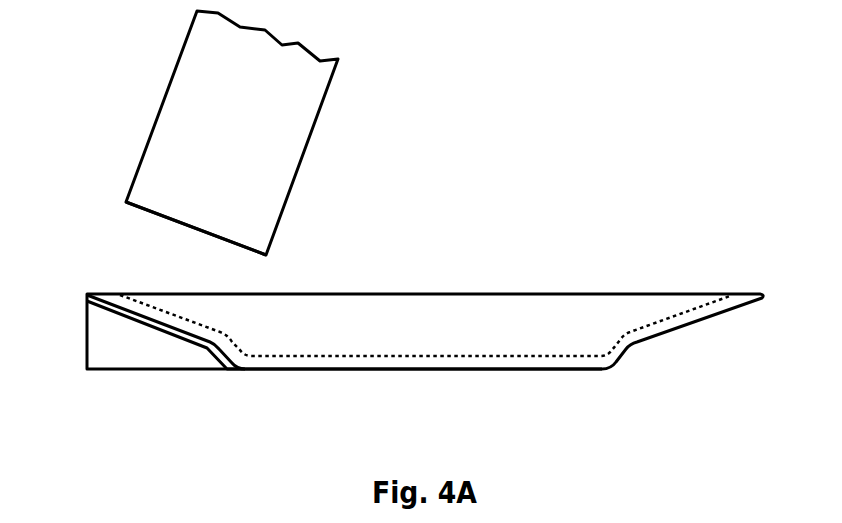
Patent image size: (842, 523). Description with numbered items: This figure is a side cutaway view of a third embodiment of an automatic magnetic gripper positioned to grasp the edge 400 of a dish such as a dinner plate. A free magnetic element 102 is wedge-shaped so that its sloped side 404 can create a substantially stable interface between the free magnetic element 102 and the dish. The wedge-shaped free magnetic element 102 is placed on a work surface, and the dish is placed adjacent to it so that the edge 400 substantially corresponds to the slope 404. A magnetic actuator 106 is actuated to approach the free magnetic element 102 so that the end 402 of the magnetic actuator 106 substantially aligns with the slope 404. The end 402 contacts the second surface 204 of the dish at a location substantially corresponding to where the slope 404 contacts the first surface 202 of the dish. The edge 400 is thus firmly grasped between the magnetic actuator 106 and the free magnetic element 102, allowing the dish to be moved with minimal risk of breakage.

The magnetic actuator 106 is at (252, 137).
The end of the magnetic actuator 402 is at (200, 230).
The edge of the dish 400 is at (92, 278).
The sloped side 404 is at (100, 316).
The free magnetic element 102 is at (153, 357).
The second surface of the dish 204 is at (462, 352).
The first surface of the dish 202 is at (313, 372).